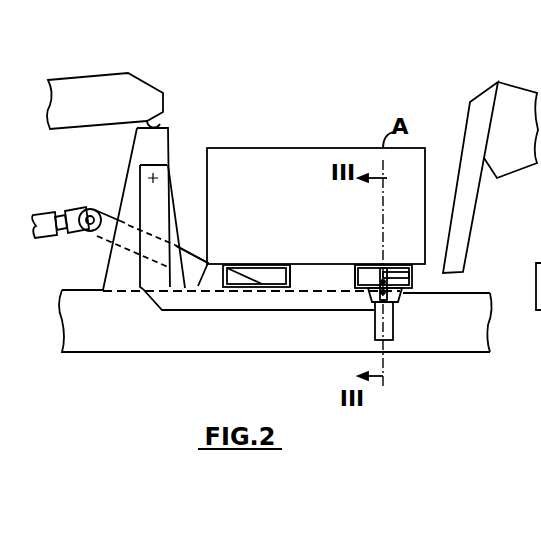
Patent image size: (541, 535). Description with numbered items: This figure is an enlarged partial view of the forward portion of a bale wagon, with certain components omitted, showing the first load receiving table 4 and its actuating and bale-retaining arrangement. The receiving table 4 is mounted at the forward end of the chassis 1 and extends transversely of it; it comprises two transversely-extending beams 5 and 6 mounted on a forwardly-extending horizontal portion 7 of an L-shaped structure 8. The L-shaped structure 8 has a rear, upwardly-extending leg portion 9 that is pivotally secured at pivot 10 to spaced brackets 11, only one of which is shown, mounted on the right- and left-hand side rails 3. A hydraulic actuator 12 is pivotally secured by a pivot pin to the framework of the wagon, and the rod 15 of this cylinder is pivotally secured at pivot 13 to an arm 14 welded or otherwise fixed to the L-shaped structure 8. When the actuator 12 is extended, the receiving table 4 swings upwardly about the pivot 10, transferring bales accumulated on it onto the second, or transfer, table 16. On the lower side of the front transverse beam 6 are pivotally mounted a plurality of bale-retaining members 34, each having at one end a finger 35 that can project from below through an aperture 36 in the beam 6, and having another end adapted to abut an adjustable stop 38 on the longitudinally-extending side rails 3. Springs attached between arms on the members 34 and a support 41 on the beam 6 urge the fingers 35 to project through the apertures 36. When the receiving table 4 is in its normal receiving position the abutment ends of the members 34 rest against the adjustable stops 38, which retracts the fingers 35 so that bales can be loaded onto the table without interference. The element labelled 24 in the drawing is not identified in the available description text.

The chassis 1 is at (200, 352).
The side rails 3 is at (473, 354).
The first load receiving table 4 is at (318, 310).
The transversely-extending beam 5 is at (300, 265).
The front transverse beam 6 is at (355, 270).
The forwardly-extending horizontal portion 7 is at (262, 292).
The L-shaped structure 8 is at (242, 312).
The rear upwardly-extending leg portion 9 is at (140, 268).
The pivot 10 is at (172, 172).
The bracket 11 is at (180, 190).
The hydraulic actuator 12 is at (45, 238).
The pivot 13 is at (91, 209).
The arm 14 is at (103, 290).
The rod 15 is at (78, 240).
The transfer table 16 is at (165, 105).
The tool holder 24 is at (150, 80).
The bale-retaining member 34 is at (412, 280).
The finger 35 is at (412, 273).
The aperture 36 is at (395, 252).
The adjustable stop 38 is at (393, 322).
The support 41 is at (405, 292).